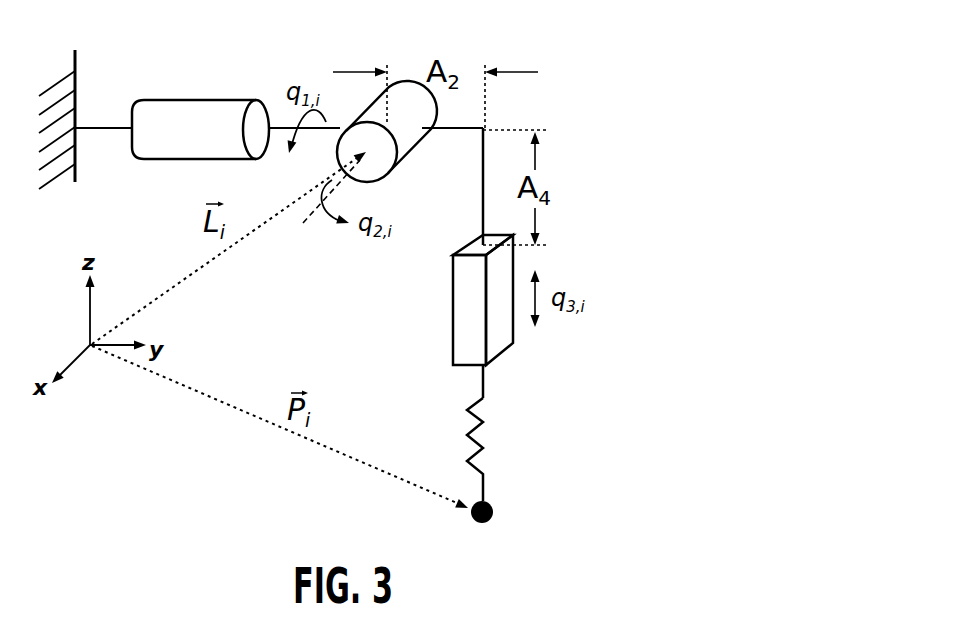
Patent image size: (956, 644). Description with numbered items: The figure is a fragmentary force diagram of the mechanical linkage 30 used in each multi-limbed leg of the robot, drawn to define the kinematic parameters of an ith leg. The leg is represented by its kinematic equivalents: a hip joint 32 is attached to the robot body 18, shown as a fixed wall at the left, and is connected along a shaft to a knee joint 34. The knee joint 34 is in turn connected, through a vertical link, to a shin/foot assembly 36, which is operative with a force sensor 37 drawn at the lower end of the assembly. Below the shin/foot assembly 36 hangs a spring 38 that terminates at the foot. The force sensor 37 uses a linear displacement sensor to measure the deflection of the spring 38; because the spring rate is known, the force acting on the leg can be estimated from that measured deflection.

The robot body 18 is at (75, 62).
The mechanical linkage 30 is at (604, 76).
The hip joint 32 is at (181, 100).
The knee joint 34 is at (421, 141).
The shin/foot assembly 36 is at (500, 261).
The force sensor 37 is at (513, 357).
The spring 38 is at (478, 422).